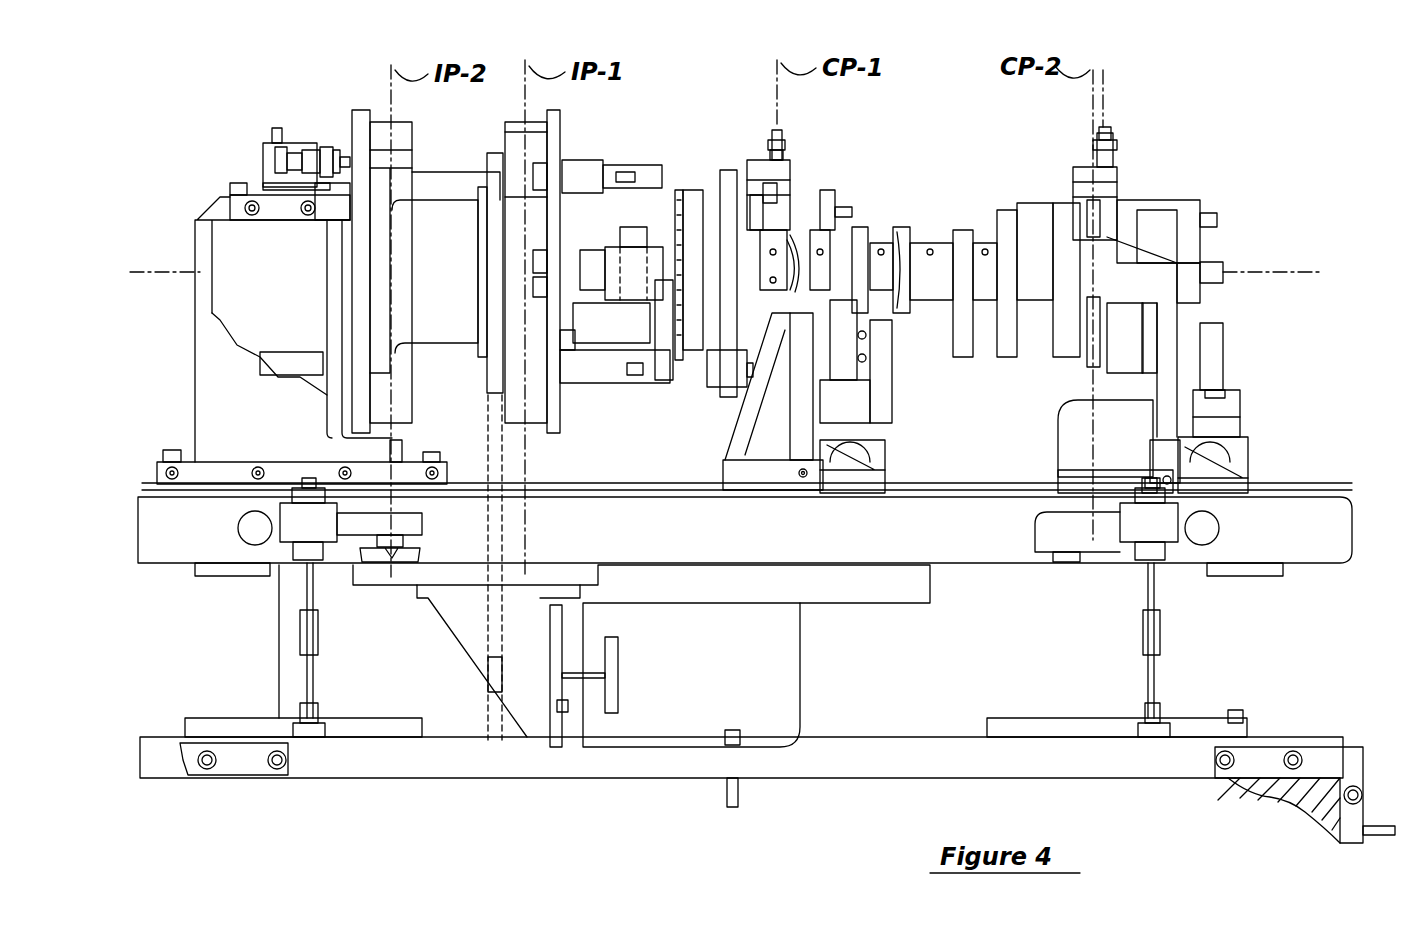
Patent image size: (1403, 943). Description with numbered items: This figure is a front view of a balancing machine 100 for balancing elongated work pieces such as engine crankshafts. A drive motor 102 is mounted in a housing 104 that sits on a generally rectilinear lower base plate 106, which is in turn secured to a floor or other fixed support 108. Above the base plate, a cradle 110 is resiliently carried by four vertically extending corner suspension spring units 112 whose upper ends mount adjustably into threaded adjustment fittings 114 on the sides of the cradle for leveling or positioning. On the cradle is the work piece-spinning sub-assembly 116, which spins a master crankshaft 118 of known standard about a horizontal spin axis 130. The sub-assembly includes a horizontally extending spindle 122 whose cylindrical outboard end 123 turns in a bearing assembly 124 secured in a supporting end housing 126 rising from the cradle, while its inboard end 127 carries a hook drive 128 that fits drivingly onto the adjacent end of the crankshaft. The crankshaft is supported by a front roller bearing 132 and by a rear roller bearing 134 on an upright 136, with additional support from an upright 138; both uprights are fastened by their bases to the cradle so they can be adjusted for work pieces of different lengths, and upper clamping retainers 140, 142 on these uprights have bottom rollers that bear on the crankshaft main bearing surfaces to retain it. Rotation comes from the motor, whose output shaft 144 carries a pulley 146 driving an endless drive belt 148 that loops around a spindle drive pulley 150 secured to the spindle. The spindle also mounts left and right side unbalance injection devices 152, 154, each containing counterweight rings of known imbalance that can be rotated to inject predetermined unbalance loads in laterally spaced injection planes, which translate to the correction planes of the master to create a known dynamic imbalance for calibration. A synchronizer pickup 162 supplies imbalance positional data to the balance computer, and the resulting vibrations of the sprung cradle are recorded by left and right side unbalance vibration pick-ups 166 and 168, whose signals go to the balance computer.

The balancing machine 100 is at (255, 128).
The drive motor 102 is at (655, 652).
The housing 104 is at (770, 628).
The lower base plate 106 is at (1104, 762).
The fixed support 108 is at (1292, 798).
The cradle 110 is at (148, 527).
The corner suspension spring units 112 is at (302, 632).
The threaded adjustment fittings 114 is at (1170, 512).
The work piece-spinning sub-assembly 116 is at (652, 160).
The master crankshaft 118 is at (905, 225).
The spindle 122 is at (445, 315).
The cylindrical outboard end 123 is at (218, 290).
The bearing assembly 124 is at (240, 203).
The supporting end housing 126 is at (212, 402).
The inboard end 127 is at (552, 137).
The hook drive 128 is at (633, 385).
The horizontal spin axis 130 is at (146, 270).
The front roller bearing 132 is at (662, 345).
The support block 134 is at (1090, 367).
The upright 136 is at (1200, 383).
The upright 138 is at (830, 398).
The upper clamping retainer 140 is at (1090, 167).
The upper clamping retainer 142 is at (785, 148).
The output shaft 144 is at (558, 690).
The pulley 146 is at (492, 690).
The endless drive belt 148 is at (492, 458).
The spindle drive pulley 150 is at (510, 130).
The left side unbalance injection device 152 is at (400, 118).
The right side unbalance injection device 154 is at (532, 118).
The synchronizer pickup 162 is at (313, 148).
The left side unbalance vibration pick-up 166 is at (248, 535).
The right side unbalance vibration pick-up 168 is at (1210, 535).